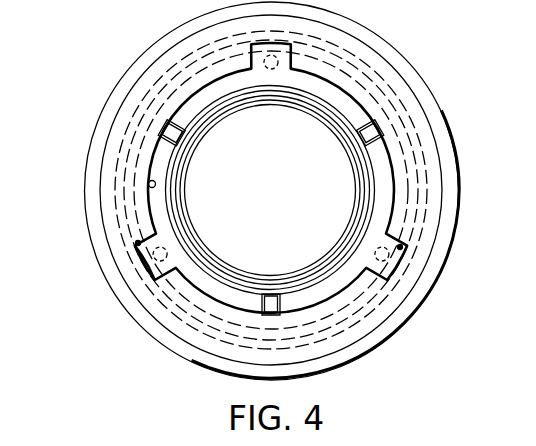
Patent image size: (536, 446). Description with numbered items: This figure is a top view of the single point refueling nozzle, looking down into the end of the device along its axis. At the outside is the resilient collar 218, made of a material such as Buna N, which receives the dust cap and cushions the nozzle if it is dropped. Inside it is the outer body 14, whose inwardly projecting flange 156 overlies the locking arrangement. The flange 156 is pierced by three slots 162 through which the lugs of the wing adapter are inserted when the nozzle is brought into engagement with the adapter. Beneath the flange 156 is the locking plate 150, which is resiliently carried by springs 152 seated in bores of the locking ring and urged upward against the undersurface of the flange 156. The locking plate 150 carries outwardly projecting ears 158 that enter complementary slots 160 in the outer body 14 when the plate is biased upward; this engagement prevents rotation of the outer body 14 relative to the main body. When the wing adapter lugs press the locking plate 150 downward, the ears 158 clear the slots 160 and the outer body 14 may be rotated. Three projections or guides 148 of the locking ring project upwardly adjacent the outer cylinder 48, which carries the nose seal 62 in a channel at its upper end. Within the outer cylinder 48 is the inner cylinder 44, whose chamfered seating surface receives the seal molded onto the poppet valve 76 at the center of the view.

The outer body 14 is at (430, 116).
The inner cylinder 44 is at (237, 280).
The outer cylinder 48 is at (208, 277).
The nose seal 62 is at (218, 276).
The poppet valve 76 is at (284, 189).
The projections or guides 148 is at (180, 132).
The locking plate 150 is at (383, 197).
The spring 152 is at (188, 242).
The inwardly projecting flange 156 is at (150, 183).
The outwardly projecting ears 158 is at (400, 256).
The slots 160 is at (405, 311).
The slots 162 is at (140, 252).
The collar 218 is at (384, 38).